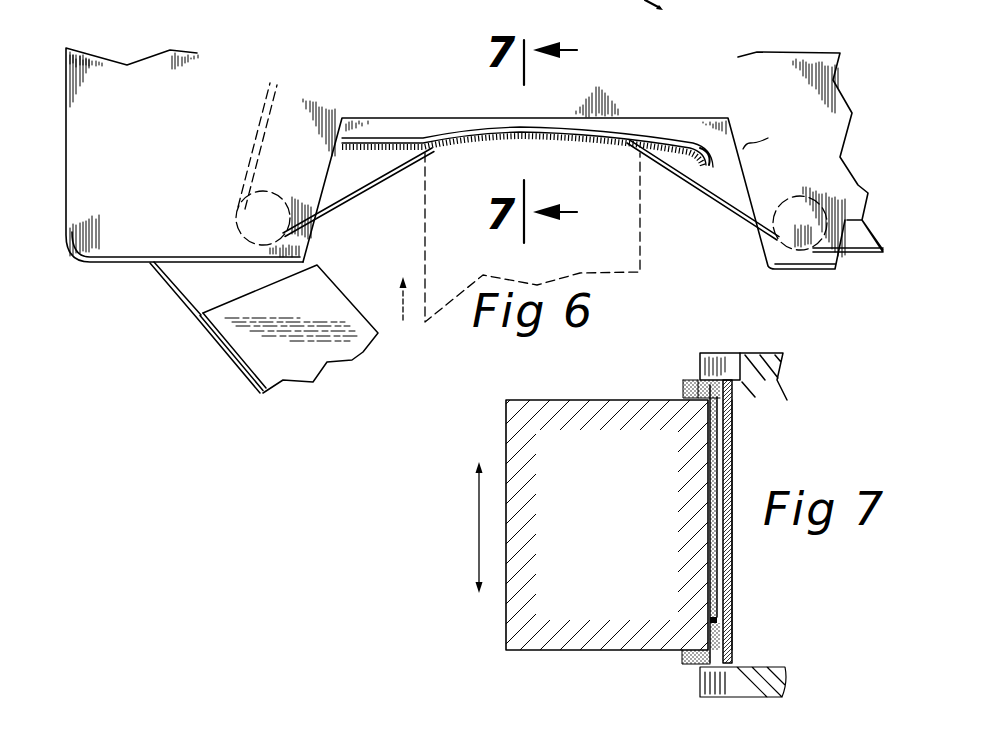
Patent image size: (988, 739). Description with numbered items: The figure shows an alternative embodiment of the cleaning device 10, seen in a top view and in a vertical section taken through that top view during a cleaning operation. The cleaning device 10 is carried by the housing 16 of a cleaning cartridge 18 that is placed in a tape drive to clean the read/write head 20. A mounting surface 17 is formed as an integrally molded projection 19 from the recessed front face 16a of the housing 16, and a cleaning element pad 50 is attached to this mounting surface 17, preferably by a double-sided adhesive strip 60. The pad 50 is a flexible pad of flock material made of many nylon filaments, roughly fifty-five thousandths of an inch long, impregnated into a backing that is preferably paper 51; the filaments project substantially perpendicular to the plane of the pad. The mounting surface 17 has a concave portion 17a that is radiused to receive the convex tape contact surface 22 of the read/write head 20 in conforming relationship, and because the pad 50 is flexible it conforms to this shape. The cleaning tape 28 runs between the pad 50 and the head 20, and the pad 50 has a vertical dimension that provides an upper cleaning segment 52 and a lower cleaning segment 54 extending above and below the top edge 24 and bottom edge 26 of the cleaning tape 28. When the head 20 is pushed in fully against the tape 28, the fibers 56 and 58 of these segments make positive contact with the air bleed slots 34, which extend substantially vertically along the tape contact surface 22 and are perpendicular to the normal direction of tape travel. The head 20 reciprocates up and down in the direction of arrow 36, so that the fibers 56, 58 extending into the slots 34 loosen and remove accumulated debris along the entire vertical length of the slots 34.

In FIG. 6, the cleaning device 10 is at (102, 282).
In FIG. 6, the housing 16 is at (135, 84).
In FIG. 7, the housing 16 is at (787, 400).
In FIG. 6, the recessed front face 16a is at (680, 127).
In FIG. 7, the recessed front face 16a is at (733, 378).
In FIG. 6, the mounting surface 17 is at (770, 138).
In FIG. 7, the mounting surface 17 is at (712, 675).
In FIG. 7, the concave portion 17a is at (725, 385).
In FIG. 6, the cleaning cartridge 18 is at (138, 272).
In FIG. 7, the cleaning cartridge 18 is at (797, 374).
In FIG. 6, the integrally molded projection 19 is at (403, 126).
In FIG. 7, the integrally molded projection 19 is at (720, 378).
In FIG. 6, the read/write head 20 is at (443, 313).
In FIG. 7, the read/write head 20 is at (495, 628).
In FIG. 7, the tape contact surface 22 is at (724, 595).
In FIG. 7, the top edge of cleaning tape 24 is at (710, 428).
In FIG. 7, the bottom edge of cleaning tape 26 is at (712, 617).
In FIG. 6, the cleaning tape 28 is at (727, 224).
In FIG. 7, the cleaning tape 28 is at (697, 523).
In FIG. 6, the air bleed slots 34 is at (593, 142).
In FIG. 7, the air bleed slots 34 is at (710, 545).
In FIG. 7, the arrow 36 is at (479, 528).
In FIG. 6, the cleaning element pad 50 is at (677, 168).
In FIG. 7, the cleaning element pad 50 is at (755, 427).
In FIG. 6, the paper backing 51 is at (713, 170).
In FIG. 7, the paper backing 51 is at (732, 455).
In FIG. 7, the upper cleaning segment 52 is at (705, 390).
In FIG. 7, the lower cleaning segment 54 is at (700, 668).
In FIG. 7, the fibers 56 is at (688, 387).
In FIG. 7, the fibers 58 is at (682, 657).
In FIG. 6, the double-sided adhesive strip 60 is at (718, 163).
In FIG. 7, the double-sided adhesive strip 60 is at (733, 577).